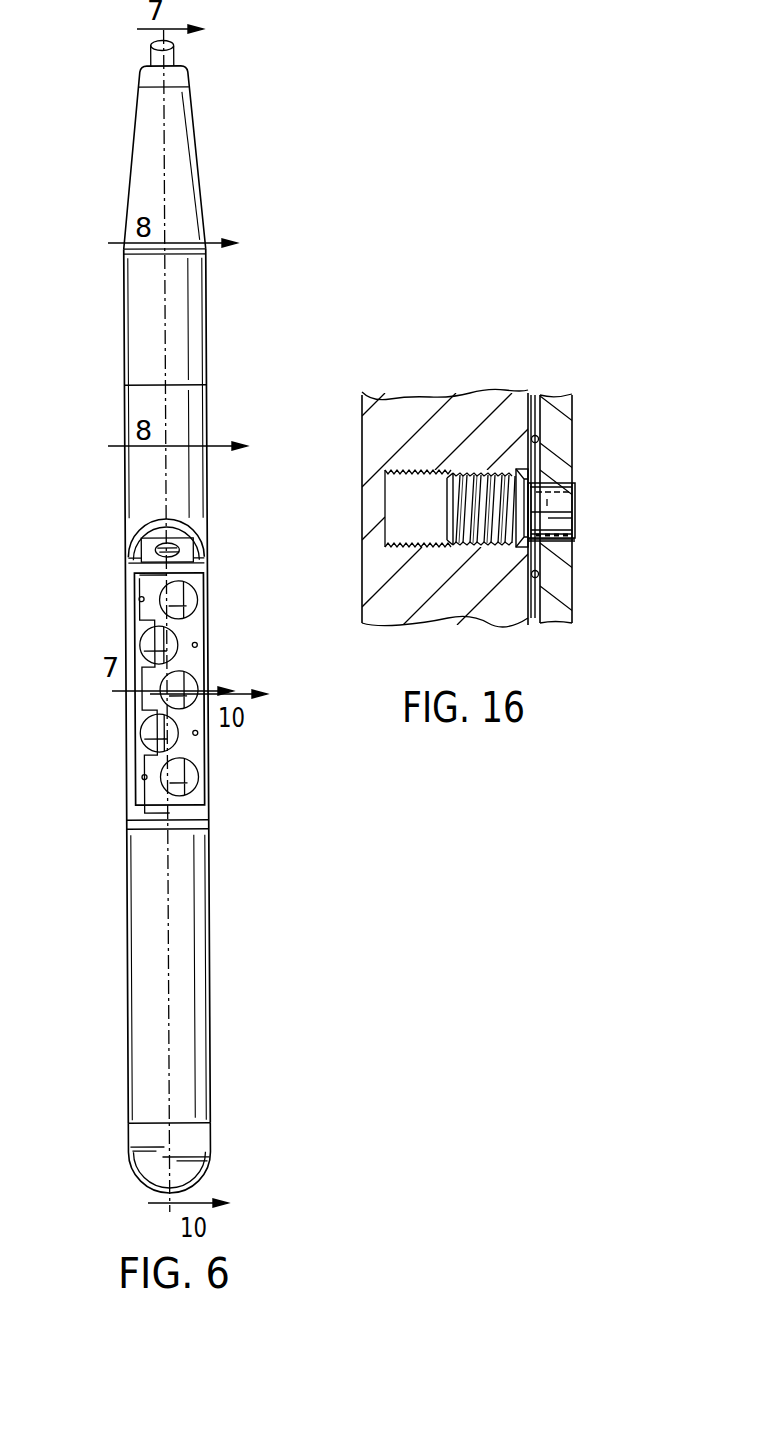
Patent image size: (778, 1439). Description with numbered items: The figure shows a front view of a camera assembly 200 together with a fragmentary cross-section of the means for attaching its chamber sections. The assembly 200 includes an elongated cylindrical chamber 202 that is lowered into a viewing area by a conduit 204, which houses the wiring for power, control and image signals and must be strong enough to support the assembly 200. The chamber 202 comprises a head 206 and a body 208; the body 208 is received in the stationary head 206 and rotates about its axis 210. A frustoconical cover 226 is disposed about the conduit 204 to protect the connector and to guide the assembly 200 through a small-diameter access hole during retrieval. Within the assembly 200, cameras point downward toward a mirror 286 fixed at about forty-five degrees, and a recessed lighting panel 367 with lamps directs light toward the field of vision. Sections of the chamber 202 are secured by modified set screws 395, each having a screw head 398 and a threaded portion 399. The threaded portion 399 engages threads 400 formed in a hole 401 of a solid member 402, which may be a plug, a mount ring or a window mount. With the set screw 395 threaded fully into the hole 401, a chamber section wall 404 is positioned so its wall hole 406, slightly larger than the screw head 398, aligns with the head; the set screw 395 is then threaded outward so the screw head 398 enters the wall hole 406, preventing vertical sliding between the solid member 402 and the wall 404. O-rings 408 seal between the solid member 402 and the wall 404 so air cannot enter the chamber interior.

In FIG. 6, the camera assembly 200 is at (273, 212).
In FIG. 6, the elongated cylindrical chamber 202 is at (124, 478).
In FIG. 6, the conduit 204 is at (172, 47).
In FIG. 6, the head 206 is at (185, 343).
In FIG. 6, the body 208 is at (209, 975).
In FIG. 6, the axis 210 is at (185, 371).
In FIG. 6, the cover 226 is at (131, 170).
In FIG. 6, the mirror 286 is at (208, 1147).
In FIG. 6, the lighting panel 367 is at (202, 638).
In FIG. 16, the modified set screw 395 is at (590, 500).
In FIG. 16, the screw head 398 is at (567, 520).
In FIG. 16, the threaded portion 399 is at (473, 482).
In FIG. 16, the threads 400 is at (390, 527).
In FIG. 16, the hole 401 is at (420, 510).
In FIG. 16, the solid member 402 is at (478, 595).
In FIG. 16, the chamber section wall 404 is at (573, 407).
In FIG. 16, the wall hole 406 is at (573, 540).
In FIG. 16, the O-rings 408 is at (540, 440).